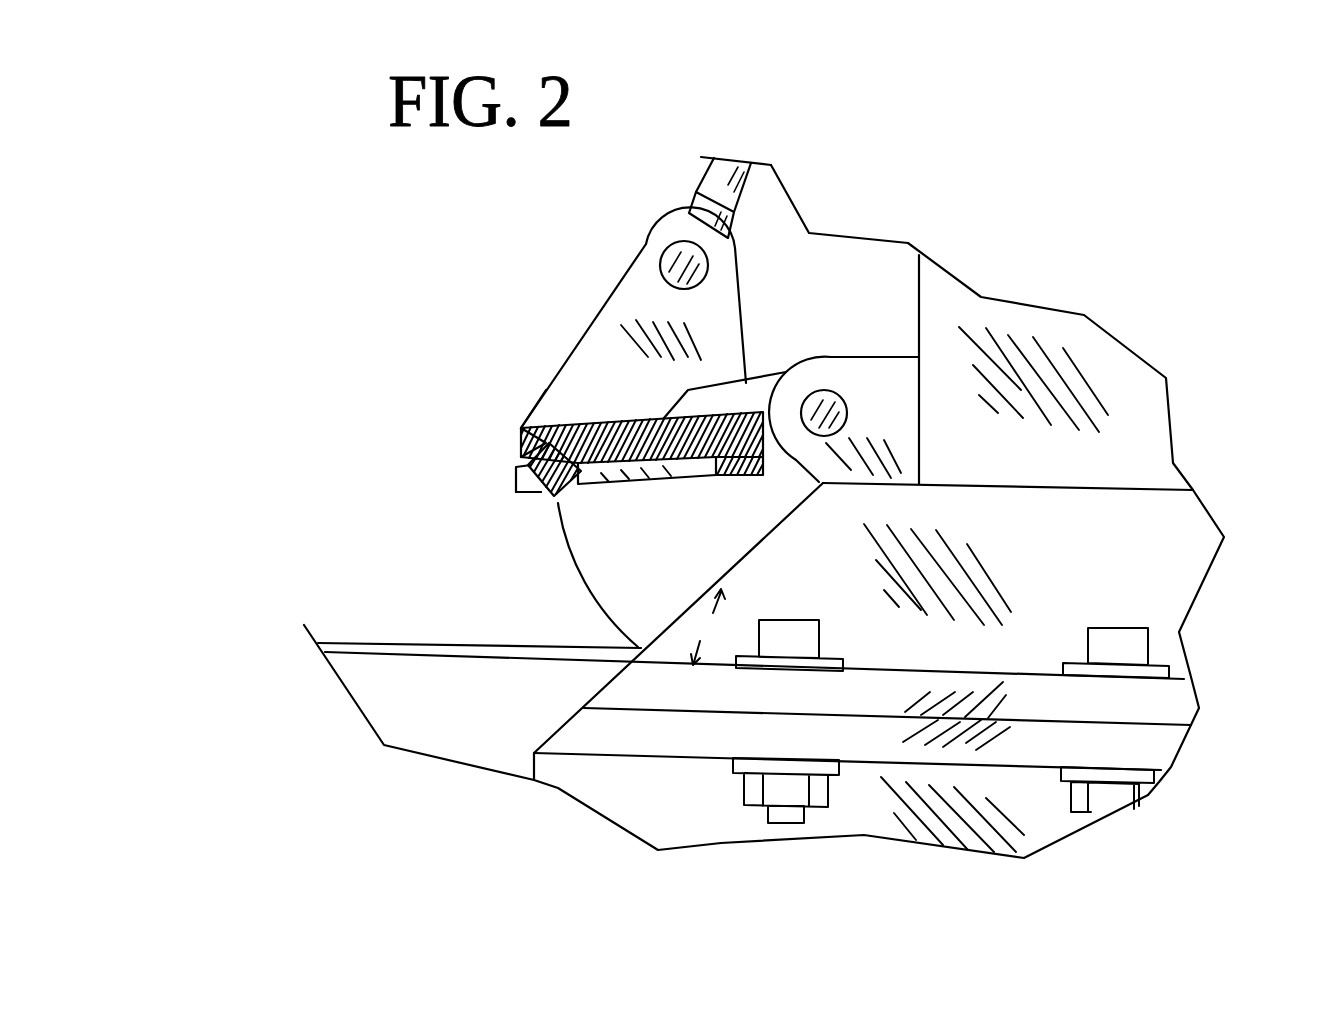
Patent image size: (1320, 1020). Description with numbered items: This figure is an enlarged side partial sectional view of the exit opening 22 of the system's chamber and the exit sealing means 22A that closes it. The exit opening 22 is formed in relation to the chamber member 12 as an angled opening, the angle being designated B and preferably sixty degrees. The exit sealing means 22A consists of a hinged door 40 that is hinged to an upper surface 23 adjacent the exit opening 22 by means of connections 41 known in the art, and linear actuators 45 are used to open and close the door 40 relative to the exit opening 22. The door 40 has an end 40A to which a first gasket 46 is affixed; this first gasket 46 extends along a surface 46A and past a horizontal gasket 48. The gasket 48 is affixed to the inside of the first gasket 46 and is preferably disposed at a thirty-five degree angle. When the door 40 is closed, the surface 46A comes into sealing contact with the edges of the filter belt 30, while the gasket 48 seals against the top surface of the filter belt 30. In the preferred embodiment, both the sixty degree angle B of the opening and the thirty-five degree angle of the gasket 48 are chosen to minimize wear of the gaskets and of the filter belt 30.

The chamber member 12 is at (1188, 515).
The exit opening 22 is at (753, 538).
The exit sealing means 22A is at (523, 403).
The upper surface 23 is at (915, 318).
The filter belt 30 is at (371, 643).
The hinged door 40 is at (518, 429).
The end of the door 40A is at (518, 452).
The connections 41 is at (764, 385).
The linear actuators 45 is at (685, 210).
The first gasket 46 is at (513, 473).
The surface 46A is at (518, 493).
The horizontal gasket 48 is at (553, 493).
The angled opening B is at (708, 627).